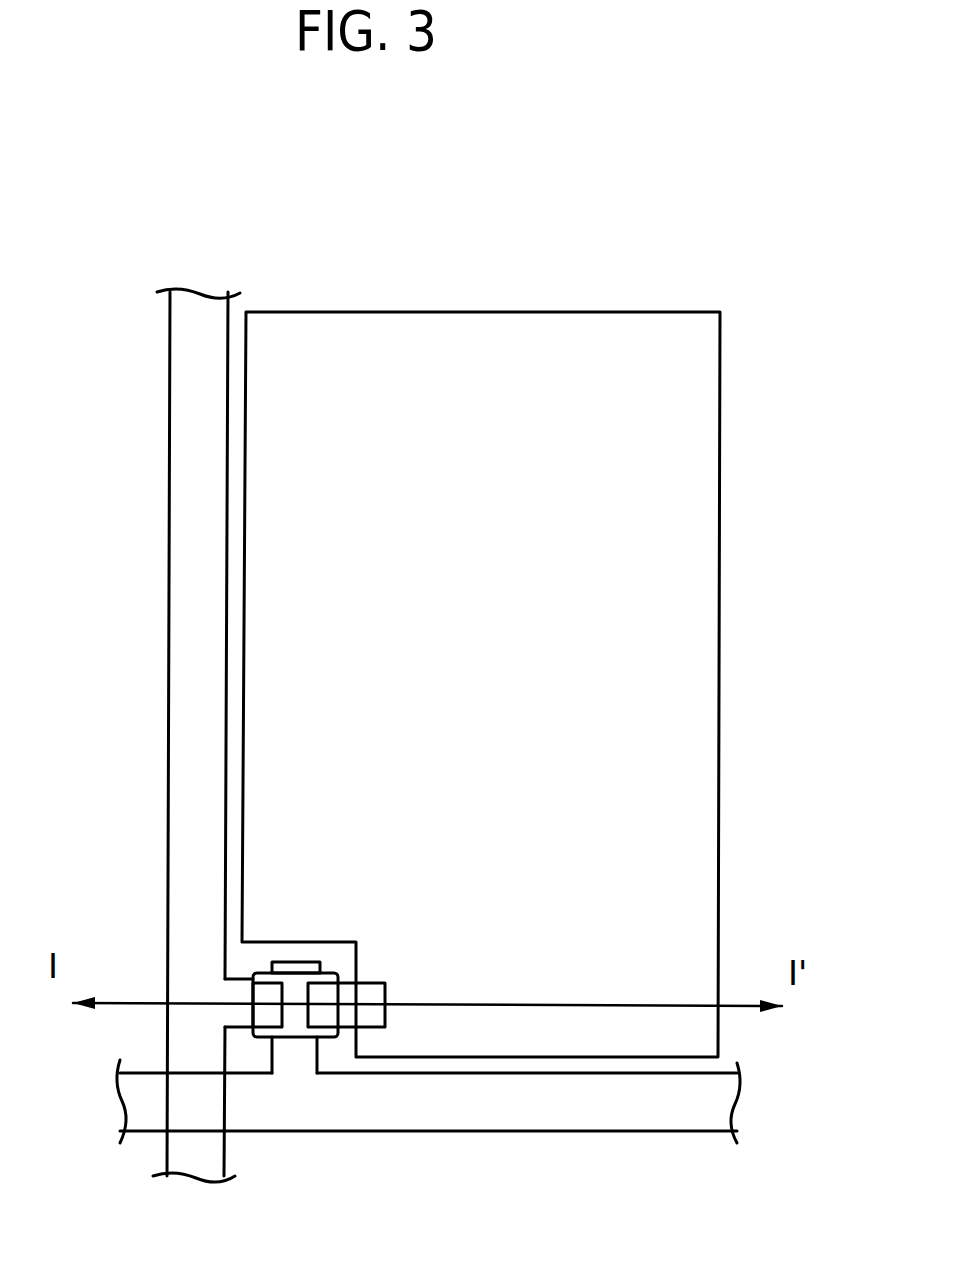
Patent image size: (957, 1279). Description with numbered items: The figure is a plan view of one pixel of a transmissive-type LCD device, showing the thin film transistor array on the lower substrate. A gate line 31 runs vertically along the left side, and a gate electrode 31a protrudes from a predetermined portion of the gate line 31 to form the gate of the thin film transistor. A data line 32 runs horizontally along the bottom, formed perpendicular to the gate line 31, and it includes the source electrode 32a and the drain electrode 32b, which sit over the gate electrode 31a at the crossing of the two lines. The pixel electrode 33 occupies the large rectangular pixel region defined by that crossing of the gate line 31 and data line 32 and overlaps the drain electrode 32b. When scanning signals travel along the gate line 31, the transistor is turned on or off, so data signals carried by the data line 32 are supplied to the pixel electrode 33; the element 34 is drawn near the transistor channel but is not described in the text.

The gate line 31 is at (608, 1117).
The gate electrode 31a is at (305, 1060).
The data line 32 is at (187, 600).
The source electrode 32a is at (242, 992).
The drain electrode 32b is at (347, 992).
The pixel electrode 33 is at (708, 686).
The semiconductor layer 34 is at (293, 1027).